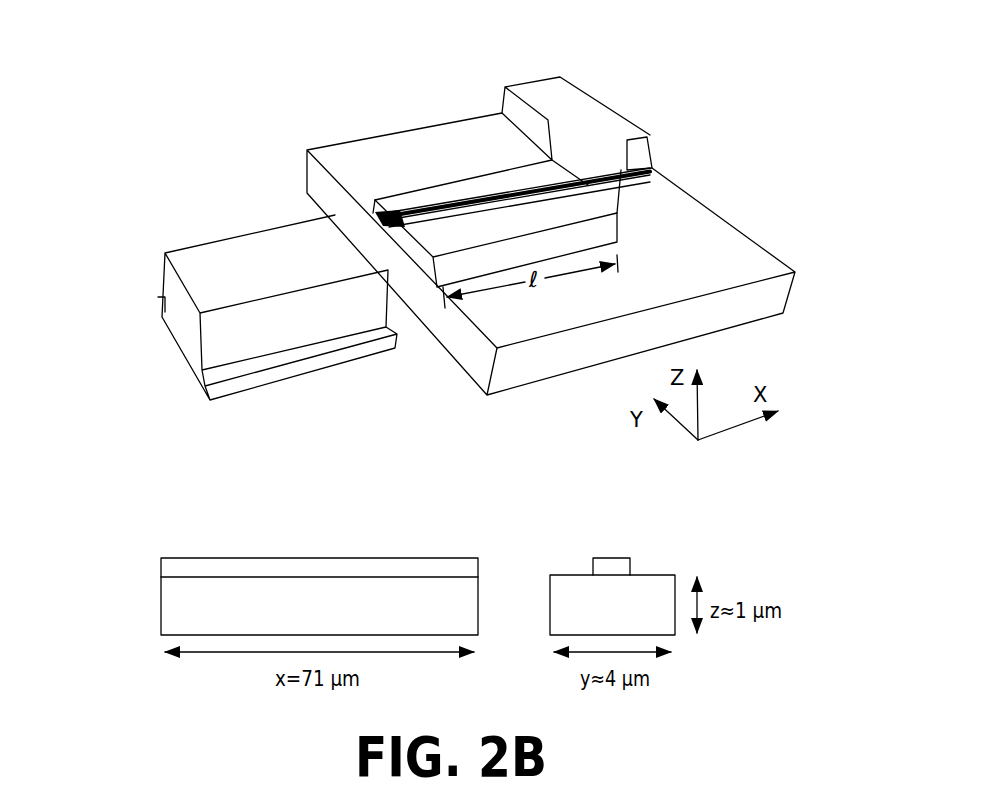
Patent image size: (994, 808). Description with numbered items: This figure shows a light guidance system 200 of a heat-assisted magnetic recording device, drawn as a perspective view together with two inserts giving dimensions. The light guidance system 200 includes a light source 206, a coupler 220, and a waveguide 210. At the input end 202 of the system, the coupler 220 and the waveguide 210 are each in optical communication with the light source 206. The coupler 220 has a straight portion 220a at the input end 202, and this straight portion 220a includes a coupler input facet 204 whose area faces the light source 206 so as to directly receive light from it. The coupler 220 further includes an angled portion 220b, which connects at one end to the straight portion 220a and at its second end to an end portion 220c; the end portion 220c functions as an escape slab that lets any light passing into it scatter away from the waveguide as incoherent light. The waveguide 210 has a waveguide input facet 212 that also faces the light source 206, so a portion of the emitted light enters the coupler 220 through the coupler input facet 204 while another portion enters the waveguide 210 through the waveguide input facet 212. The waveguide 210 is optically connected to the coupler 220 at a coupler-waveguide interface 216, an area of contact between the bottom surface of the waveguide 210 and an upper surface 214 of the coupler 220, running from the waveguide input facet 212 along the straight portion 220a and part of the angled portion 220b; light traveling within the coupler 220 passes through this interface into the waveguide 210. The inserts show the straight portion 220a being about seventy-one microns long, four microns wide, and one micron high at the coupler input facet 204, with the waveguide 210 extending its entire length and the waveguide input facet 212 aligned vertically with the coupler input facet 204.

The light guidance system 200 is at (716, 108).
The input end 202 is at (366, 188).
The coupler input facet 204 is at (416, 284).
The light source 206 is at (225, 263).
The waveguide 210 is at (652, 170).
The waveguide input facet 212 is at (385, 213).
The upper surface 214 is at (472, 248).
The coupler-waveguide interface 216 is at (156, 576).
The coupler 220 is at (463, 193).
The straight portion 220a is at (490, 193).
The angled portion 220b is at (588, 168).
The end portion 220c is at (566, 108).